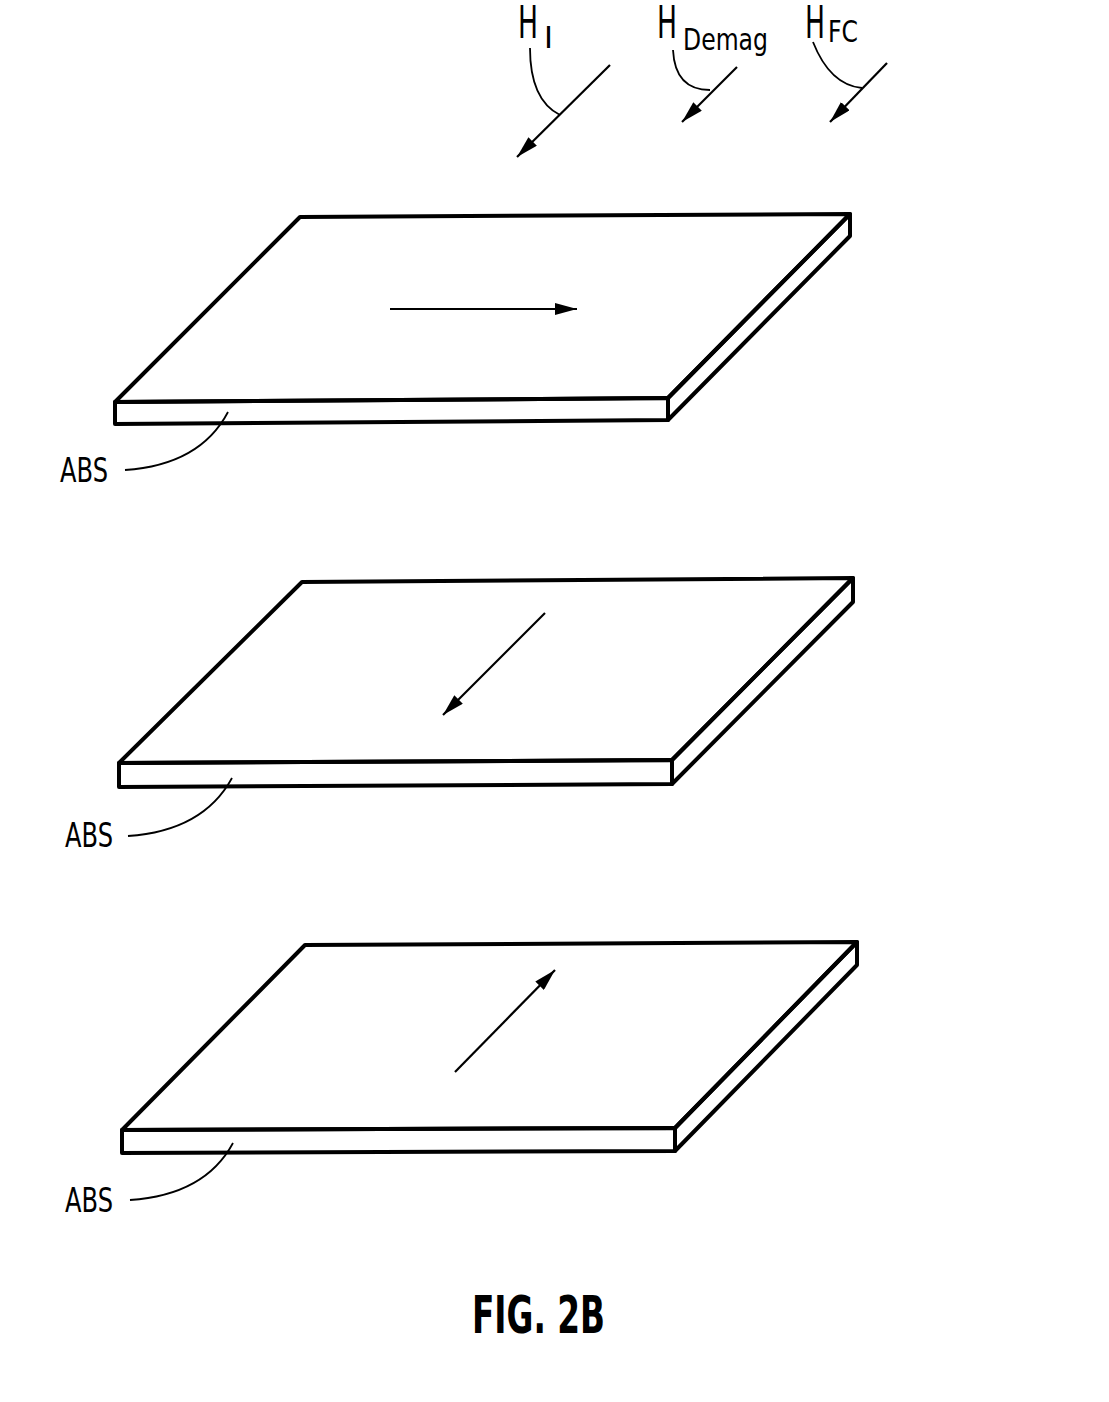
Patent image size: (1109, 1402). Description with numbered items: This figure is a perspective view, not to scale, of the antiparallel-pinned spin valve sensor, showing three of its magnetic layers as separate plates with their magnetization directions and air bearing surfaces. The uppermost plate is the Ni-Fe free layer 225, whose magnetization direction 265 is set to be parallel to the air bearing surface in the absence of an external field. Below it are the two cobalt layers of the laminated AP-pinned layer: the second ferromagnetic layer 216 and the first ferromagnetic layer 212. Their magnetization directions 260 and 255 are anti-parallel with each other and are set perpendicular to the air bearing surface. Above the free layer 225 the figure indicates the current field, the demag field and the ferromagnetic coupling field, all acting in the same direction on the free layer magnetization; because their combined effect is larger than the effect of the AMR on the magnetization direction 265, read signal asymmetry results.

The free layer 225 is at (668, 343).
The magnetization direction of the free layer 265 is at (473, 307).
The second ferromagnetic layer 216 is at (672, 707).
The magnetization direction of the second ferromagnetic layer 260 is at (500, 657).
The first ferromagnetic layer 212 is at (673, 1070).
The magnetization direction of the first ferromagnetic layer 255 is at (503, 1023).